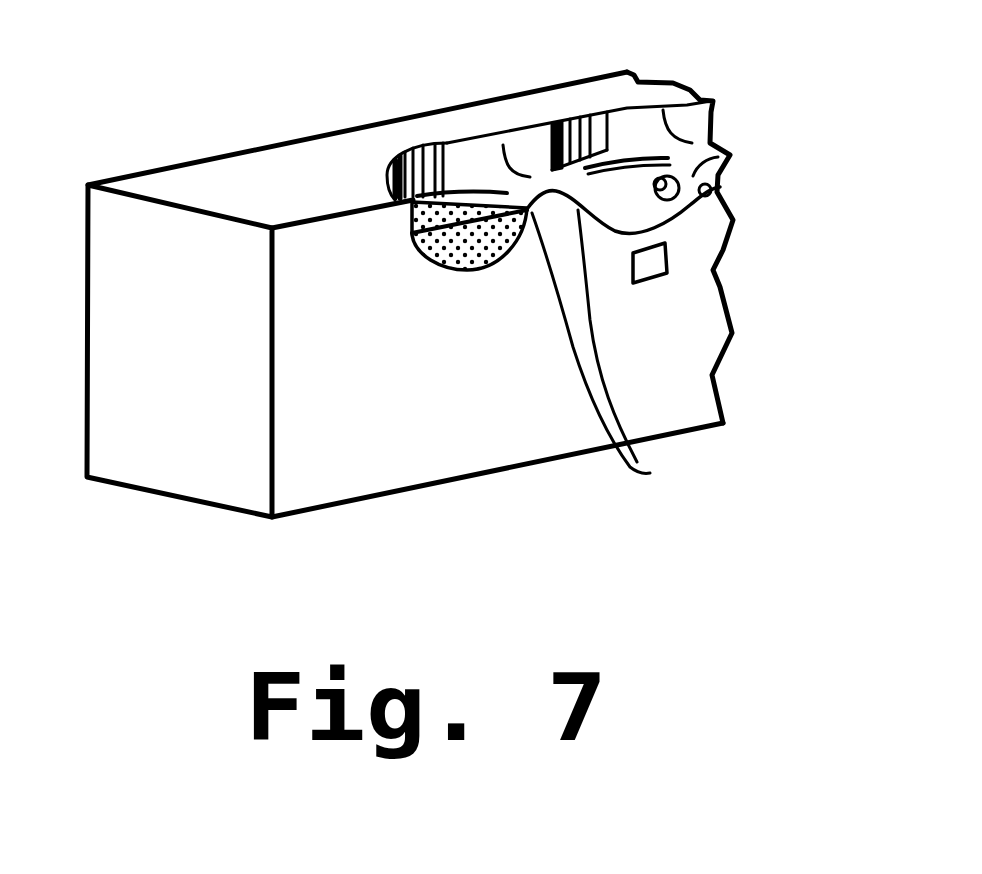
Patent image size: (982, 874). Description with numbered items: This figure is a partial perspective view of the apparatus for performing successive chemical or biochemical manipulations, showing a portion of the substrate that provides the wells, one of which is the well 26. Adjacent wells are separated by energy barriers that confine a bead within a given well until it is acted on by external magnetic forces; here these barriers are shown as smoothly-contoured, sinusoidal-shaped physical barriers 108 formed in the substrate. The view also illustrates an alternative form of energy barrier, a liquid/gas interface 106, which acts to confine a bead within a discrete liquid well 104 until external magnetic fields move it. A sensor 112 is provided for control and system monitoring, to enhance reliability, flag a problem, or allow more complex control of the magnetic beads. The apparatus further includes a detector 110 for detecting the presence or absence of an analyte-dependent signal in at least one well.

The well 26 is at (490, 272).
The liquid well 104 is at (437, 272).
The liquid/gas interface 106 is at (443, 195).
The smoothly-contoured physical barrier 108 is at (636, 358).
The detector 110 is at (667, 263).
The sensor 112 is at (720, 190).